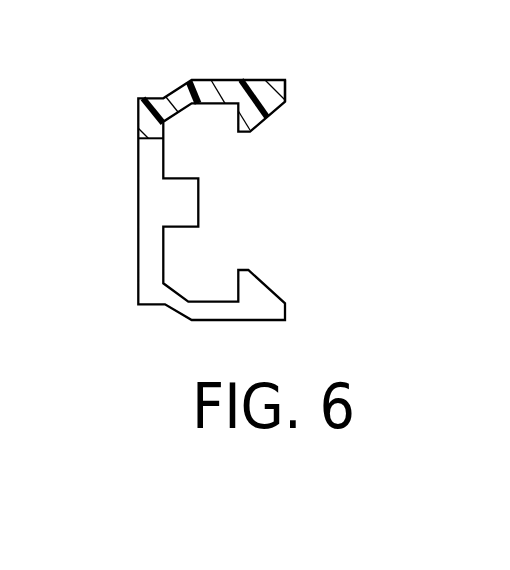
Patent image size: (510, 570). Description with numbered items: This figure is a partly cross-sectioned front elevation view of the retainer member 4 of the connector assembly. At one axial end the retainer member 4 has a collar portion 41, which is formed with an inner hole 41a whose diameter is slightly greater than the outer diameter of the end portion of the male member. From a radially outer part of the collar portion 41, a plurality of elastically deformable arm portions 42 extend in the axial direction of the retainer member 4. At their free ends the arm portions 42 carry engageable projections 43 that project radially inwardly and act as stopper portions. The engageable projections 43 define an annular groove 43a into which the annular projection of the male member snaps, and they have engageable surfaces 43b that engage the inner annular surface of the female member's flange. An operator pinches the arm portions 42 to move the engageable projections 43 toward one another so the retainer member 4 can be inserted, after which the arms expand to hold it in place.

The retainer member 4 is at (122, 354).
The collar portion 41 is at (147, 118).
The inner hole 41a is at (150, 139).
The arm portion 42 is at (214, 88).
The engageable projection 43 is at (257, 92).
The annular groove 43a is at (238, 119).
The engageable surface 43b is at (286, 85).